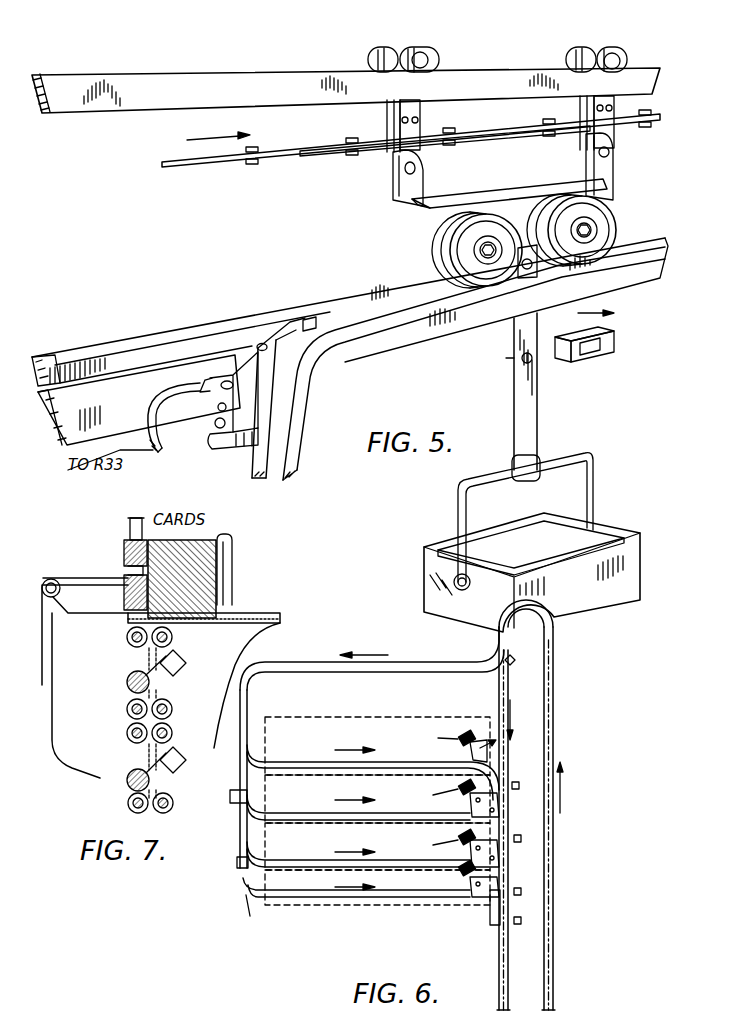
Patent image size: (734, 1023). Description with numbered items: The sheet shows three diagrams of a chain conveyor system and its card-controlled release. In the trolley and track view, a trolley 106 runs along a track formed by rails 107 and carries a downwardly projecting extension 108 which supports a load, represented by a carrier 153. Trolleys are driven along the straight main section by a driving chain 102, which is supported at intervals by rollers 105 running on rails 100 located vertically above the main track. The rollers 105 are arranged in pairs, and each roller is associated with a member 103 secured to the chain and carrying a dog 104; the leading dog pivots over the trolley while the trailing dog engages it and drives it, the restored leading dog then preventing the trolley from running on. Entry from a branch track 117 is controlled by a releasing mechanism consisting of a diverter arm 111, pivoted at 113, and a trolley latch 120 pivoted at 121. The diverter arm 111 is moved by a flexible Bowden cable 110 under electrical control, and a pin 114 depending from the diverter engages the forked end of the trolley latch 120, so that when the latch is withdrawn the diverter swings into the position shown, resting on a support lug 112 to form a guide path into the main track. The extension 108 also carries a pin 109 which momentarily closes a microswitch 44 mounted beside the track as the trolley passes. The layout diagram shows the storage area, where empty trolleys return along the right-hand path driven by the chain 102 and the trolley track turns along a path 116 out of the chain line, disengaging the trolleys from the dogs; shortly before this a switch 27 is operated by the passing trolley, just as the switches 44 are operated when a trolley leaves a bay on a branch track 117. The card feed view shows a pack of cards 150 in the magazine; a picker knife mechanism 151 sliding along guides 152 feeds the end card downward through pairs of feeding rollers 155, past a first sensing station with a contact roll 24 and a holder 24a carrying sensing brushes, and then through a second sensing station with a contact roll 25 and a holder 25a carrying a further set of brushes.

In FIG. 5, the rails 100 is at (116, 80).
In FIG. 5, the driving chain 102 is at (270, 165).
In FIG. 6, the driving chain 102 is at (500, 690).
In FIG. 5, the member 103 is at (395, 152).
In FIG. 5, the dog 104 is at (400, 198).
In FIG. 5, the rollers 105 is at (366, 60).
In FIG. 5, the trolley 106 is at (490, 195).
In FIG. 5, the rails 107 is at (640, 240).
In FIG. 6, the rails 107 is at (498, 950).
In FIG. 5, the extension 108 is at (534, 430).
In FIG. 5, the pin 109 is at (512, 360).
In FIG. 5, the Bowden cable 110 is at (147, 413).
In FIG. 5, the diverter arm 111 is at (272, 318).
In FIG. 5, the support lug 112 is at (309, 318).
In FIG. 5, the pivot 113 is at (258, 344).
In FIG. 5, the pin 114 is at (204, 404).
In FIG. 6, the path 116 is at (413, 662).
In FIG. 5, the branch track 117 is at (286, 468).
In FIG. 6, the branch track 117 is at (397, 761).
In FIG. 5, the trolley latch 120 is at (230, 450).
In FIG. 5, the pivot 121 is at (215, 428).
In FIG. 5, the carrier 153 is at (584, 590).
In FIG. 5, the microswitch 44 is at (574, 360).
In FIG. 6, the microswitch 44 is at (518, 782).
In FIG. 6, the switch 27 is at (516, 660).
In FIG. 7, the pack of cards 150 is at (200, 619).
In FIG. 7, the picker knife mechanism 151 is at (125, 553).
In FIG. 7, the guides 152 is at (129, 526).
In FIG. 7, the feeding rollers 155 is at (152, 640).
In FIG. 7, the contact roll 24 is at (127, 683).
In FIG. 7, the holder 24a is at (178, 676).
In FIG. 7, the contact roll 25 is at (128, 787).
In FIG. 7, the holder 25a is at (183, 772).